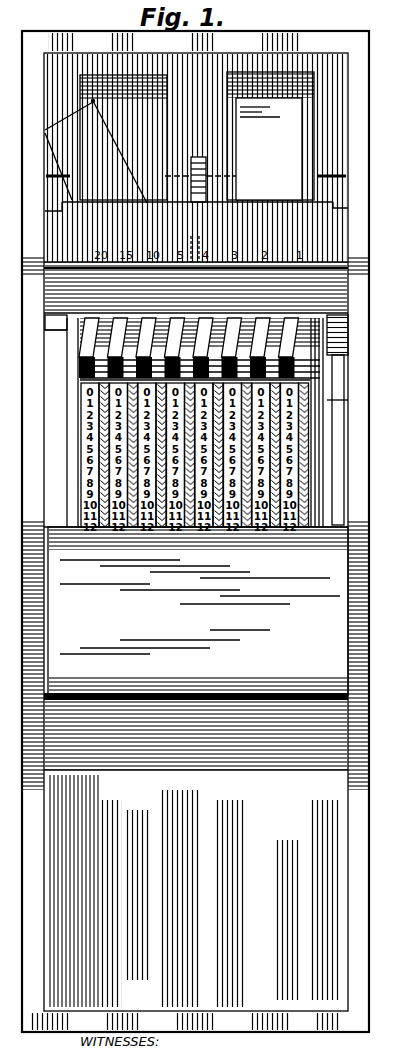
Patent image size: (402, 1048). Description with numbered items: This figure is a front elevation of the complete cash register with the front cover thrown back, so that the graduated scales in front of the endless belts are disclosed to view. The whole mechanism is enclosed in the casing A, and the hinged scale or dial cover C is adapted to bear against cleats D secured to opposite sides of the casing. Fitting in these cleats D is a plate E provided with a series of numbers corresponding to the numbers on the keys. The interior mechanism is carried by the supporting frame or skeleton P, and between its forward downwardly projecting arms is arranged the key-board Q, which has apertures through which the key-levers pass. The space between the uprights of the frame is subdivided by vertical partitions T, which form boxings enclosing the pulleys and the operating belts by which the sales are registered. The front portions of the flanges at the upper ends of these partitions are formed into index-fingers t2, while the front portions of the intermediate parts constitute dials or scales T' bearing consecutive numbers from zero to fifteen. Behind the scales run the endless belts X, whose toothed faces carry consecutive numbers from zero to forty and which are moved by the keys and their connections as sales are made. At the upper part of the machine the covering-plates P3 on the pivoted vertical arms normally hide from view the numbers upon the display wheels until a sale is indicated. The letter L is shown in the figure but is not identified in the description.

The casing A is at (358, 850).
The supporting frame P is at (333, 73).
The covering-plates P3 is at (64, 157).
The plate E is at (196, 193).
The index-fingers t2 is at (80, 357).
The vertical partitions T is at (174, 425).
The endless belts X is at (82, 383).
The cleats D is at (57, 341).
The lever L is at (335, 345).
The dials or scales T' is at (226, 541).
The hinged scale or dial cover C is at (196, 613).
The key-board Q is at (221, 722).